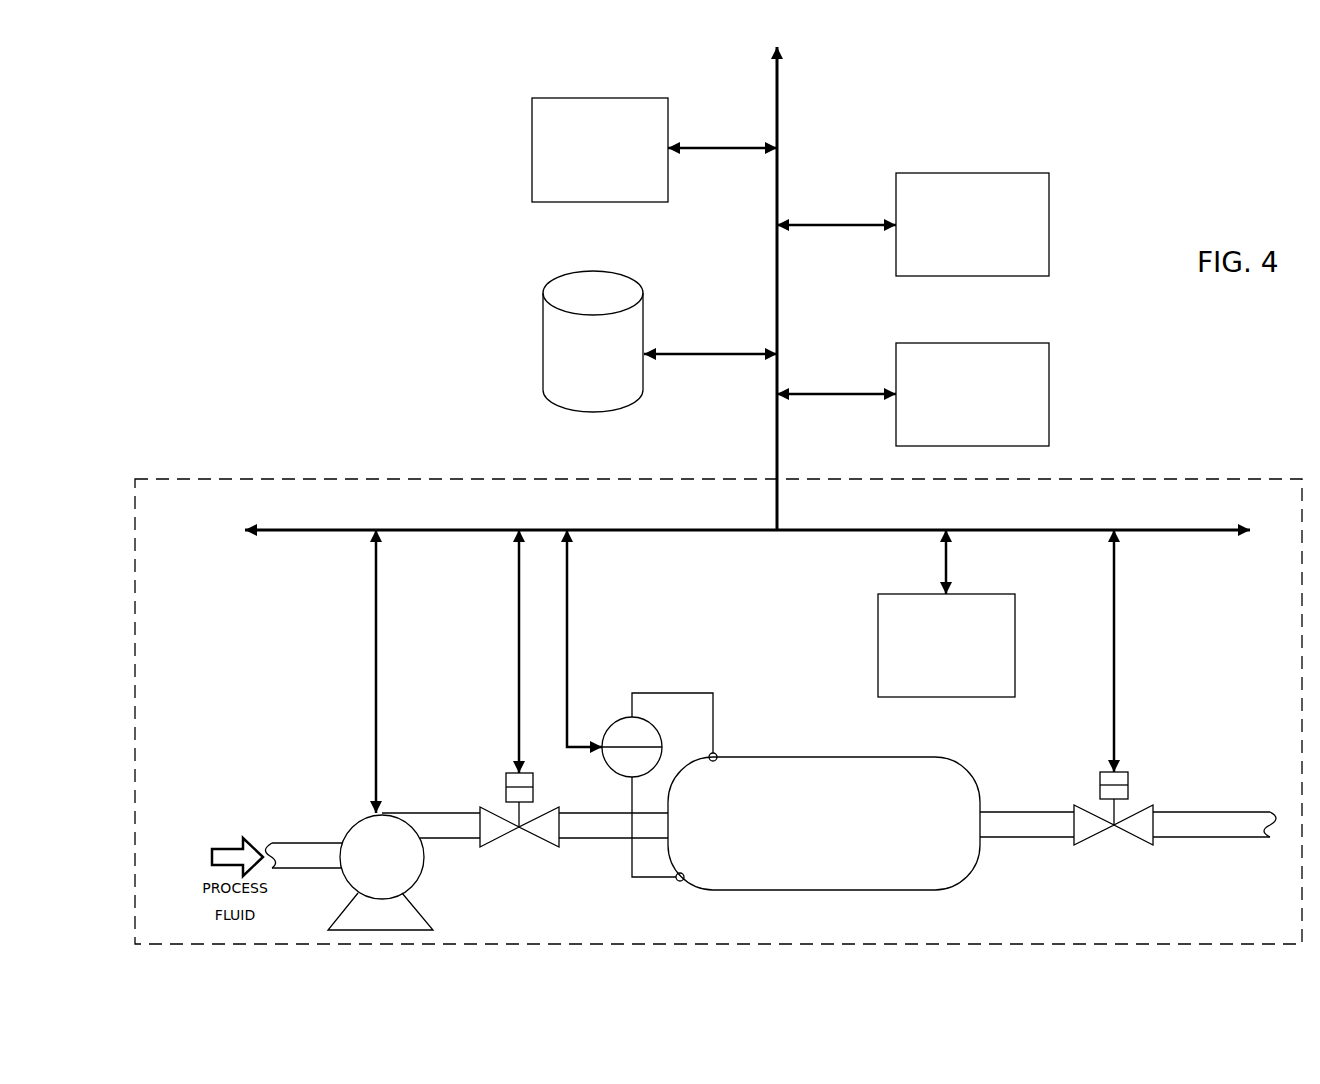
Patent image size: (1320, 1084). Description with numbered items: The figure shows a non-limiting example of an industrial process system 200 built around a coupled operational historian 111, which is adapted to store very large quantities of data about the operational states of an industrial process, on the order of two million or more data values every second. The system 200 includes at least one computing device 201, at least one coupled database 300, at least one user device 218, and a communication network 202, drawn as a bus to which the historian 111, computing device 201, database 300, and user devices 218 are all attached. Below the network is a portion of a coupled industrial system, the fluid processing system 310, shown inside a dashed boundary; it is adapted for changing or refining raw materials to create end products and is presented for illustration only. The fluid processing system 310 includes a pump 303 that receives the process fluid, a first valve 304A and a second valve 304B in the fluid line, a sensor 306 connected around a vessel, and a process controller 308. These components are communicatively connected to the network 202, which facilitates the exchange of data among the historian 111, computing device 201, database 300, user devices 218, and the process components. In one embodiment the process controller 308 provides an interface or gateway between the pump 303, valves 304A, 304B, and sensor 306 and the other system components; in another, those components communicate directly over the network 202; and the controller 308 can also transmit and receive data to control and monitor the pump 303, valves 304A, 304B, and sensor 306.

The industrial process system 200 is at (1120, 63).
The communication network 202 is at (777, 108).
The user device 218 is at (668, 108).
The operational historian 111 is at (1049, 212).
The computing device 201 is at (1049, 390).
The database 300 is at (644, 300).
The fluid processing system 310 is at (240, 478).
The process controller 308 is at (1015, 635).
The pump 303 is at (355, 822).
The valve 304A is at (506, 787).
The valve 304B is at (1128, 785).
The sensor 306 is at (612, 727).